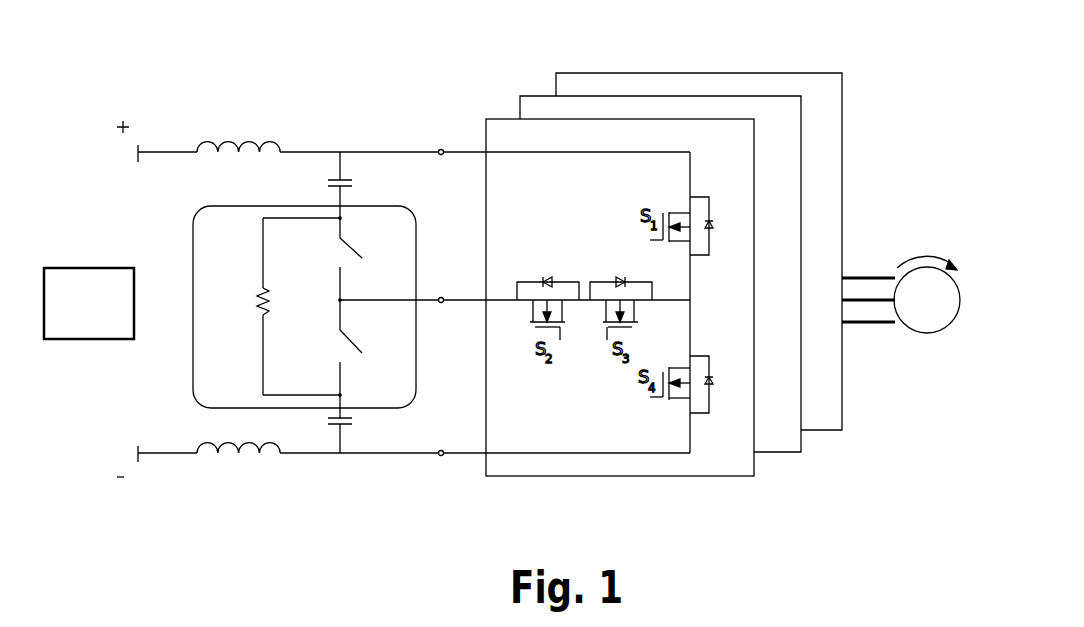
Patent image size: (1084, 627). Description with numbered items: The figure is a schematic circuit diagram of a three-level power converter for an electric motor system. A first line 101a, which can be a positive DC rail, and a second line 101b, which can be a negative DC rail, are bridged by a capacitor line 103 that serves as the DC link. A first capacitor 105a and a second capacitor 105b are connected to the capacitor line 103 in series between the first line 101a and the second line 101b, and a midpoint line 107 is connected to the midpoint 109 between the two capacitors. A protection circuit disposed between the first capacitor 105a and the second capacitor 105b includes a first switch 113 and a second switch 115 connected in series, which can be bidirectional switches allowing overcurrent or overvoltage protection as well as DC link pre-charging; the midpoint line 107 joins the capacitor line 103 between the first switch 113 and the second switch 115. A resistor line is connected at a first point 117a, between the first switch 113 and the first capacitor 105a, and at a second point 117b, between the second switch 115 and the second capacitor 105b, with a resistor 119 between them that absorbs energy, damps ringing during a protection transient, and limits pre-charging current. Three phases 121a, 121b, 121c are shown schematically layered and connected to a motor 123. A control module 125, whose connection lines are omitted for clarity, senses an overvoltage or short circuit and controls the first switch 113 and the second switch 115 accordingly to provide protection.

The first line 101a is at (330, 150).
The second line 101b is at (315, 455).
The capacitor line 103 is at (340, 170).
The first capacitor 105a is at (352, 183).
The second capacitor 105b is at (352, 424).
The midpoint line 107 is at (424, 298).
The midpoint 109 is at (340, 300).
The first switch 113 is at (350, 238).
The second switch 115 is at (365, 350).
The first point 117a is at (340, 222).
The second point 117b is at (340, 392).
The resistor 119 is at (240, 298).
The first phase 121a is at (502, 118).
The second phase 121b is at (542, 95).
The third phase 121c is at (590, 72).
The motor 123 is at (930, 337).
The control module 125 is at (110, 317).